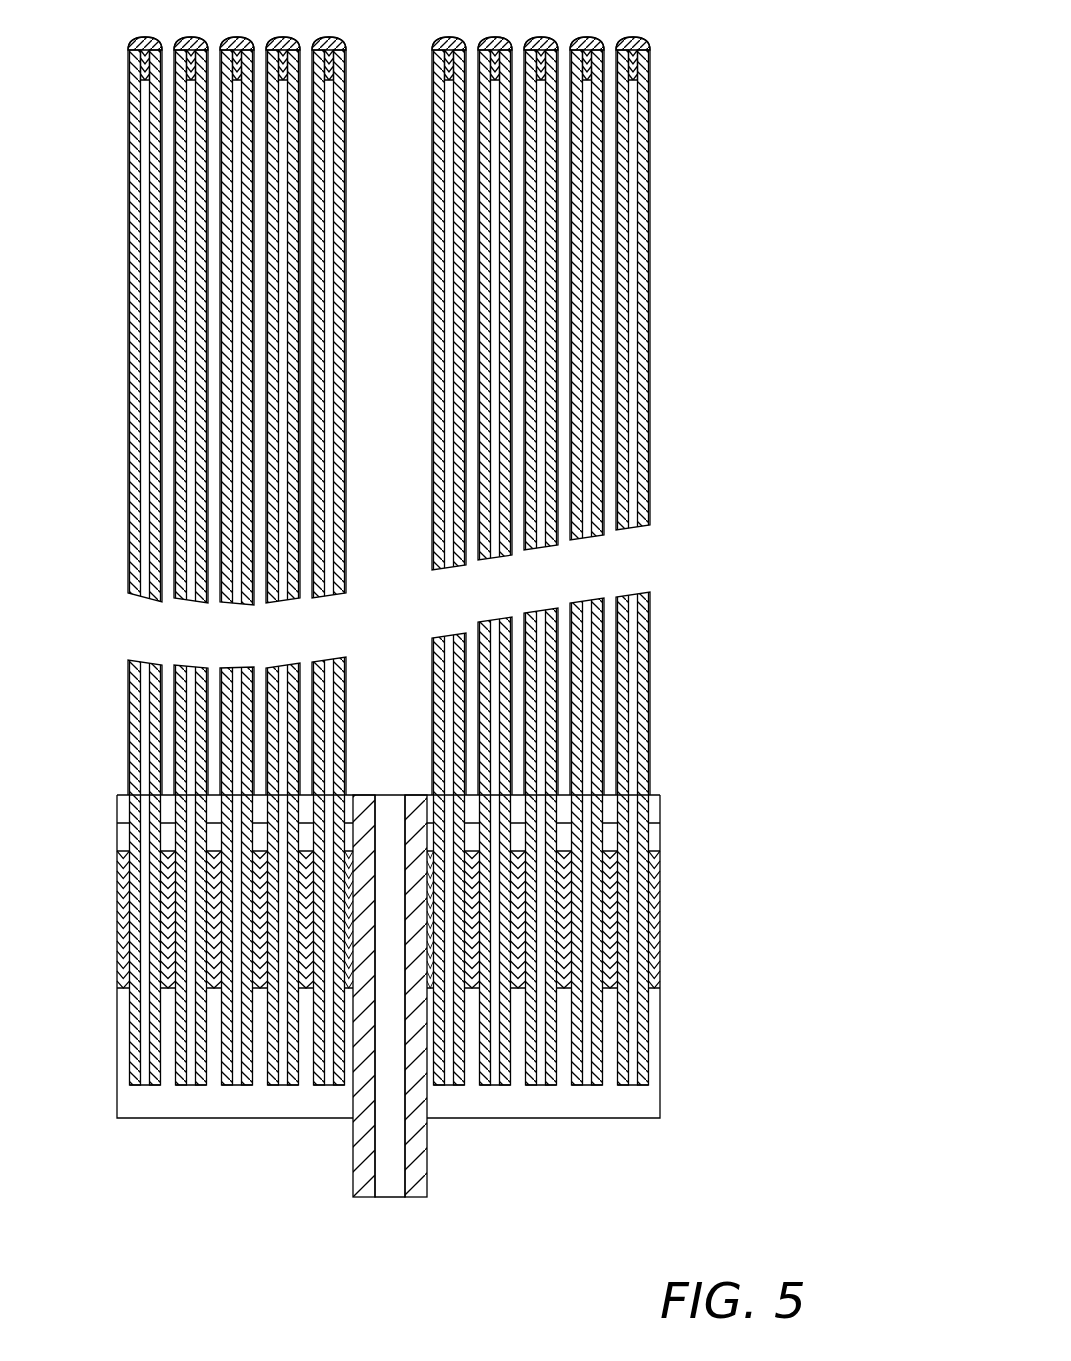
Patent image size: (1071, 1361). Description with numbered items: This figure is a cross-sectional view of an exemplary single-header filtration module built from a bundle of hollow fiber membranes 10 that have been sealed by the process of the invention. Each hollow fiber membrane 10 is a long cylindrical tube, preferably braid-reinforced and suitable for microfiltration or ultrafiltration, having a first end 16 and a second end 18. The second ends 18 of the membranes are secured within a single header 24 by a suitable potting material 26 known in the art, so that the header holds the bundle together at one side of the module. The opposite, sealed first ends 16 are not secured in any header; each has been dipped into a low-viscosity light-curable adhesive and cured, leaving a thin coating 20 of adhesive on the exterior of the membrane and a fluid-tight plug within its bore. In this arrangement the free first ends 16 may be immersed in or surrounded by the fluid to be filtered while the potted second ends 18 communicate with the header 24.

The hollow fiber membrane 10 is at (438, 544).
The first end 16 is at (666, 544).
The second end 18 is at (640, 1086).
The thin coating 20 is at (664, 53).
The header 24 is at (385, 995).
The potting material 26 is at (652, 915).